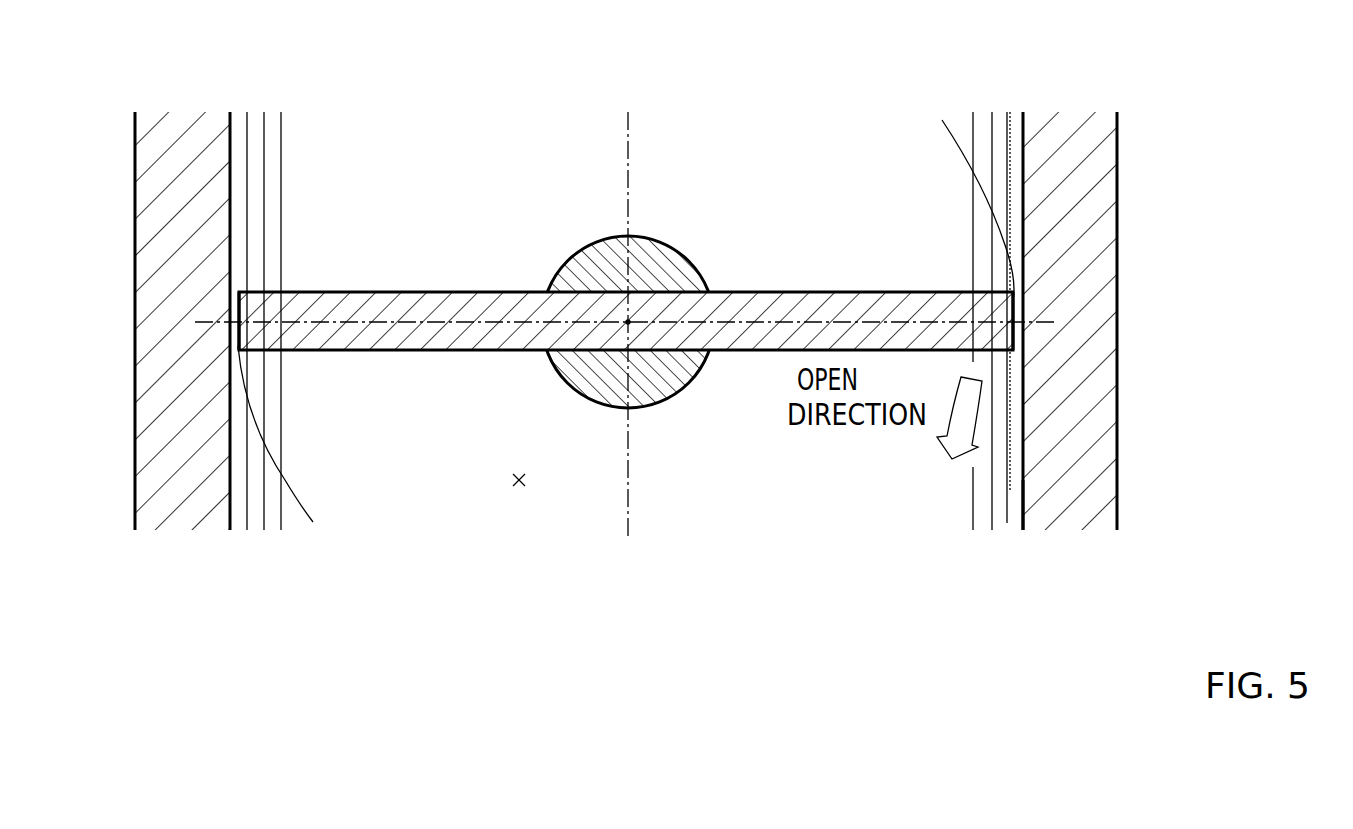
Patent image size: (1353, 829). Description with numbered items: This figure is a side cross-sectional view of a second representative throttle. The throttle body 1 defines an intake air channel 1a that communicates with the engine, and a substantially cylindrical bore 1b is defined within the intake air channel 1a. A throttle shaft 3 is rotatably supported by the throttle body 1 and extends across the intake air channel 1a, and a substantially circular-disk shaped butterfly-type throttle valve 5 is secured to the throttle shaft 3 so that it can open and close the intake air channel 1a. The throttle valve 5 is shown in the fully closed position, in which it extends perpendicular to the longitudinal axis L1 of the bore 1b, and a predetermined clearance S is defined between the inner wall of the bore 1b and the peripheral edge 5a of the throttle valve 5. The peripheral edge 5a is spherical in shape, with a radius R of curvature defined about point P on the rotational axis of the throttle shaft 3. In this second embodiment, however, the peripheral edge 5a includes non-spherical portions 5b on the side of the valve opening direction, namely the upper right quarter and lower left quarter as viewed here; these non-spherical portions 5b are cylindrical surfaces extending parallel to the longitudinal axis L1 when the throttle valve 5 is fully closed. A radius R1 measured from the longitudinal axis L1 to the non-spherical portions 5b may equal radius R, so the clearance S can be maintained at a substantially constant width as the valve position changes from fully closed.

The throttle body 1 is at (1100, 453).
The intake air channel 1a is at (520, 486).
The bore 1b is at (1021, 503).
The throttle shaft 3 is at (597, 372).
The throttle valve 5 is at (900, 290).
The peripheral edge 5a is at (238, 352).
The non-spherical portions 5b is at (238, 306).
The clearance S is at (238, 333).
The point P is at (628, 322).
The longitudinal axis L1 is at (628, 566).
The radius of curvature R is at (628, 322).
The radius R1 is at (628, 172).